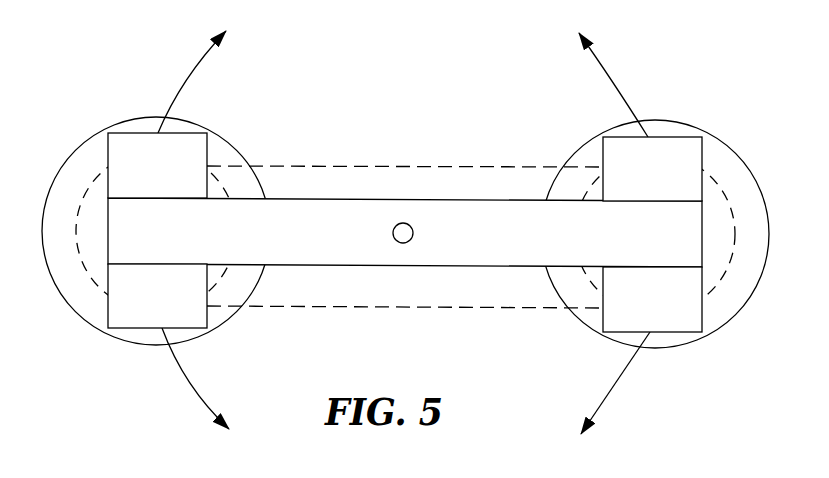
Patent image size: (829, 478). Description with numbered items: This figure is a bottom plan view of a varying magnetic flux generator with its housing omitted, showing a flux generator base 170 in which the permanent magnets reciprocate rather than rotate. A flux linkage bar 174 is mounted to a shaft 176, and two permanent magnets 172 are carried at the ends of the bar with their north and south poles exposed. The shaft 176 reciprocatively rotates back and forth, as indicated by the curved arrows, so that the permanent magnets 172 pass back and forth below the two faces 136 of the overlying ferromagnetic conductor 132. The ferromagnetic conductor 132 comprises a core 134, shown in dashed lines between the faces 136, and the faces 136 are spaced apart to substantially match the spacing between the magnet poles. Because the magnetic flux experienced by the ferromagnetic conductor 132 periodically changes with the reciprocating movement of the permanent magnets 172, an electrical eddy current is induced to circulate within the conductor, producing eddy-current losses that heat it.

The flux generator base 170 is at (405, 232).
The permanent magnets 172 is at (204, 143).
The flux linkage bar 174 is at (340, 257).
The shaft 176 is at (413, 231).
The faces 136 is at (227, 327).
The core 134 is at (340, 167).
The ferromagnetic conductor 132 is at (405, 247).